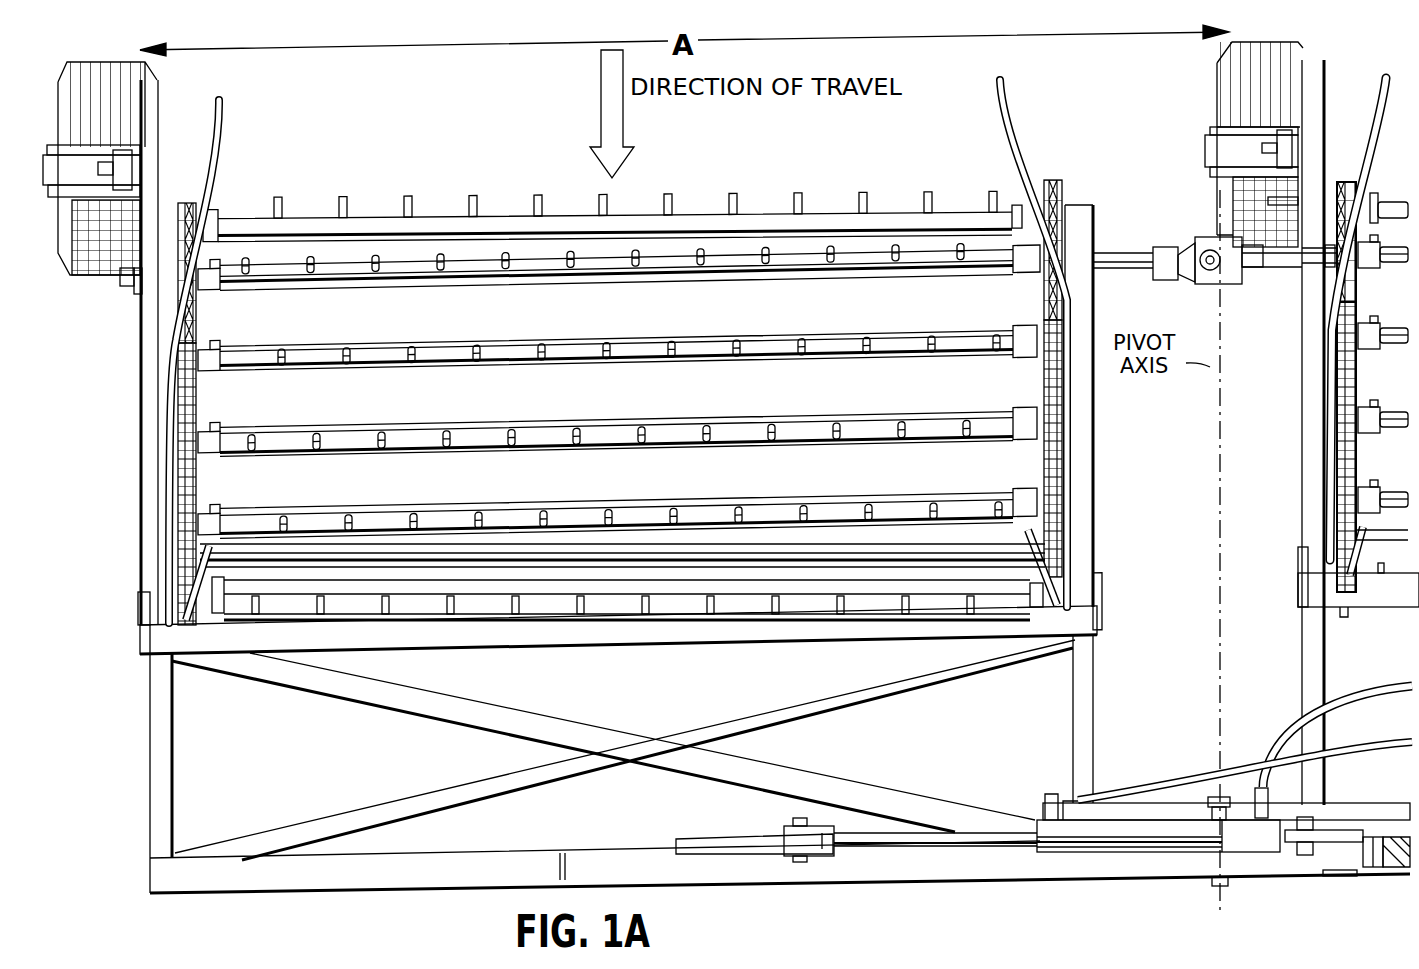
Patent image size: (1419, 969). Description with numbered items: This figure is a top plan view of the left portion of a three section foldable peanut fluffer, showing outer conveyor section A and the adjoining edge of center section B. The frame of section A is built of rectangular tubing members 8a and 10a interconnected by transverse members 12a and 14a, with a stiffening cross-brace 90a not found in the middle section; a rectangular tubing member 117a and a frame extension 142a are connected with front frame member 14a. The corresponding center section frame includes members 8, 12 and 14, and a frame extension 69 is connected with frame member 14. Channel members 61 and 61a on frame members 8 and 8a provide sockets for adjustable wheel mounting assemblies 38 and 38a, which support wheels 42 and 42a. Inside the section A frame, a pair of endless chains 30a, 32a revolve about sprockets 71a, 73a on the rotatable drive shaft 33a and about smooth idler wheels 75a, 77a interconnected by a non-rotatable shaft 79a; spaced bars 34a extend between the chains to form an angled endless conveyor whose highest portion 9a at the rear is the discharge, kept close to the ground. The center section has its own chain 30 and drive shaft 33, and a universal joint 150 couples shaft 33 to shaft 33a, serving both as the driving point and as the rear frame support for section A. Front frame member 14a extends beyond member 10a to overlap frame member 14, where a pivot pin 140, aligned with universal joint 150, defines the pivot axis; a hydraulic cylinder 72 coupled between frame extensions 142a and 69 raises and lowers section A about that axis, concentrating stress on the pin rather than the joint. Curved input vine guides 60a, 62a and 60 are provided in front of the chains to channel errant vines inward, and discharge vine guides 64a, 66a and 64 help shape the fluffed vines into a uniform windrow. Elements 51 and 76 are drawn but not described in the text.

The rectangular tubing member 8 is at (1305, 402).
The rectangular tubing member 8a is at (143, 390).
The highest portion of the endless conveyor 9a is at (446, 212).
The rectangular tubing member 10a is at (1085, 478).
The transverse rectangular tubing member 12 is at (1387, 590).
The transverse rectangular tubing member 12a is at (637, 632).
The front frame member 14 is at (1387, 808).
The front frame member 14a is at (317, 875).
The endless chain 30 is at (1337, 472).
The endless chain 30a is at (180, 468).
The endless chain 32a is at (1060, 445).
The drive shaft 33 is at (1282, 290).
The drive shaft 33a is at (119, 282).
The spaced bar 34a is at (523, 343).
The adjustable wheel mounting assembly 38 is at (1210, 152).
The adjustable wheel mounting assembly 38a is at (140, 167).
The wheel 42 is at (1222, 78).
The wheel 42a is at (149, 88).
The mounting bracket 51 is at (1288, 197).
The vine guard 60 is at (1335, 532).
The vine guide 60a is at (190, 560).
The channel member 61 is at (1298, 153).
The channel member 61a is at (141, 182).
The vine guide 62a is at (1062, 560).
The discharge vine guide 64 is at (1380, 95).
The discharge vine guide 64a is at (222, 137).
The discharge vine guide 66a is at (1010, 127).
The frame extension 69 is at (1367, 842).
The sprocket 71a is at (196, 323).
The hydraulic cylinder 72 is at (1160, 850).
The sprocket 73a is at (1037, 305).
The idler wheel 75a is at (186, 512).
The hydraulic hose 76 is at (1297, 718).
The idler wheel 77a is at (1062, 517).
The non-rotatable shaft 79a is at (592, 545).
The stiffening cross-brace 90a is at (458, 780).
The rectangular tubing member 117a is at (757, 875).
The pivot pin 140 is at (1228, 883).
The frame extension 142a is at (737, 842).
The universal joint 150 is at (1200, 250).